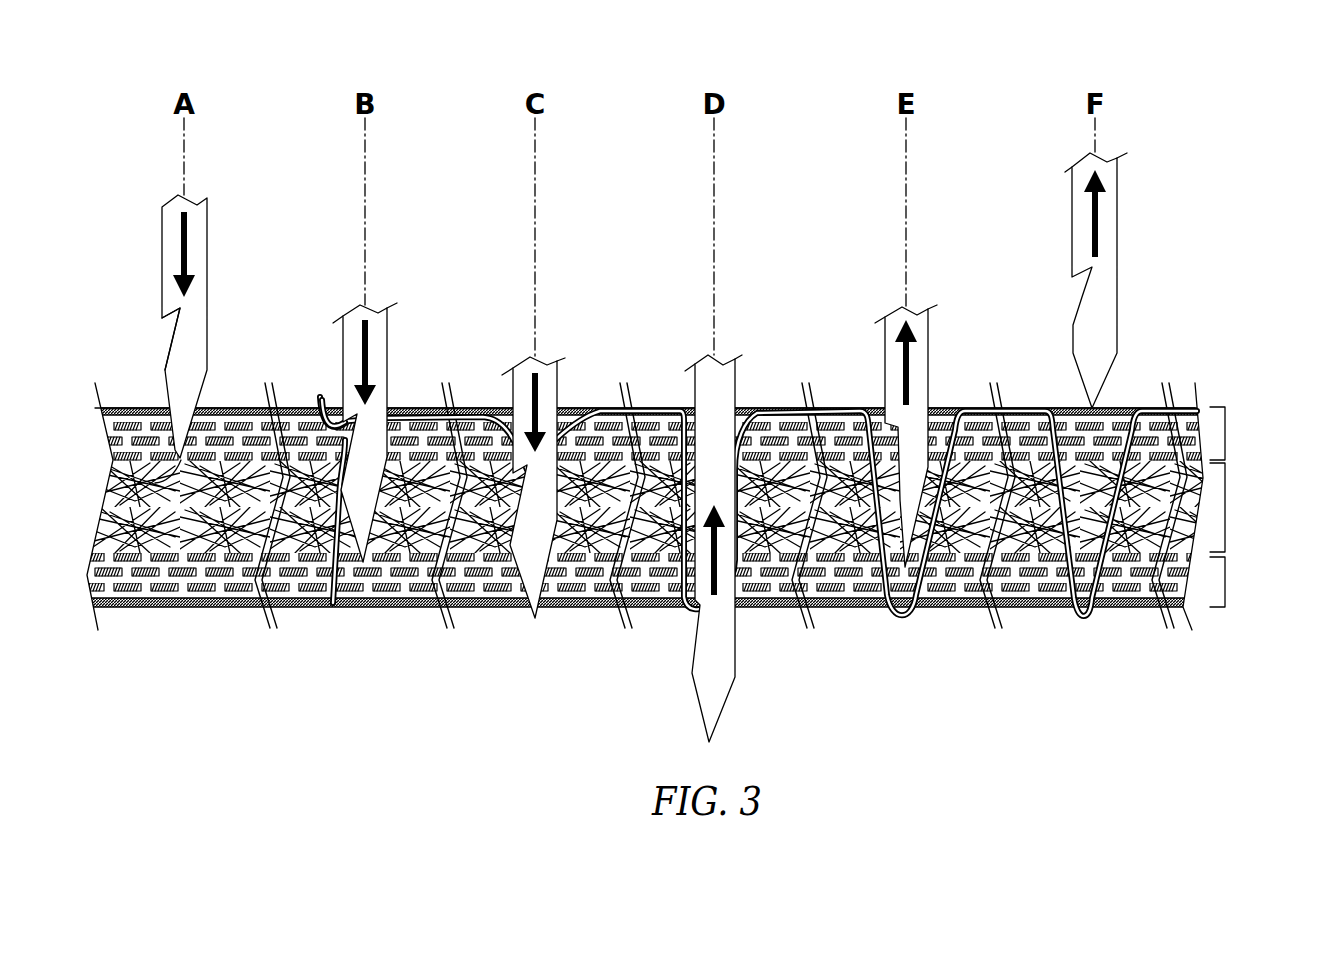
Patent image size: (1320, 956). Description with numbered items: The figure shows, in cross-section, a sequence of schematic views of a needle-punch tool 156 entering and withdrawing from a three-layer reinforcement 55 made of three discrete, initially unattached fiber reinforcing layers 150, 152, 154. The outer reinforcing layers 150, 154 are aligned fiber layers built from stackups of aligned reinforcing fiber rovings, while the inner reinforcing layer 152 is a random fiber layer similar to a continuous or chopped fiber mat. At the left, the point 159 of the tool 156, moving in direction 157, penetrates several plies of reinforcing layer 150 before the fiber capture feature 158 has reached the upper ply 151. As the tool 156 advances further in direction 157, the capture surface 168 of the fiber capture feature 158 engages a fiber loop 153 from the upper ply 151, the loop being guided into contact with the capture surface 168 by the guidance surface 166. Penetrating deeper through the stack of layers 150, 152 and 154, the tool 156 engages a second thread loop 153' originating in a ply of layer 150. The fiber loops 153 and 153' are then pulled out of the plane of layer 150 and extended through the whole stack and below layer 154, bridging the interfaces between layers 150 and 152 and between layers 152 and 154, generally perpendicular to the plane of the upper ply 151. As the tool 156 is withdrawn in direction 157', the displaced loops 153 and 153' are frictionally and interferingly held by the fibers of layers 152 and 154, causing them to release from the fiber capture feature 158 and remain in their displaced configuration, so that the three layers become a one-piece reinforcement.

The multilayer fabric composite 55 is at (699, 513).
The reinforcing layer 150 is at (1240, 433).
The upper ply 151 is at (1197, 407).
The reinforcing layer 152 is at (1240, 505).
The fiber loop 153 is at (721, 473).
The second thread loop 153' is at (736, 468).
The reinforcing layer 154 is at (1240, 582).
The tool 156 is at (162, 288).
The direction 157 is at (342, 401).
The direction of withdrawal 157' is at (951, 447).
The fiber capture feature 158 is at (180, 310).
The point 159 is at (155, 483).
The guidance surface 166 is at (335, 605).
The capture surface 168 is at (326, 412).